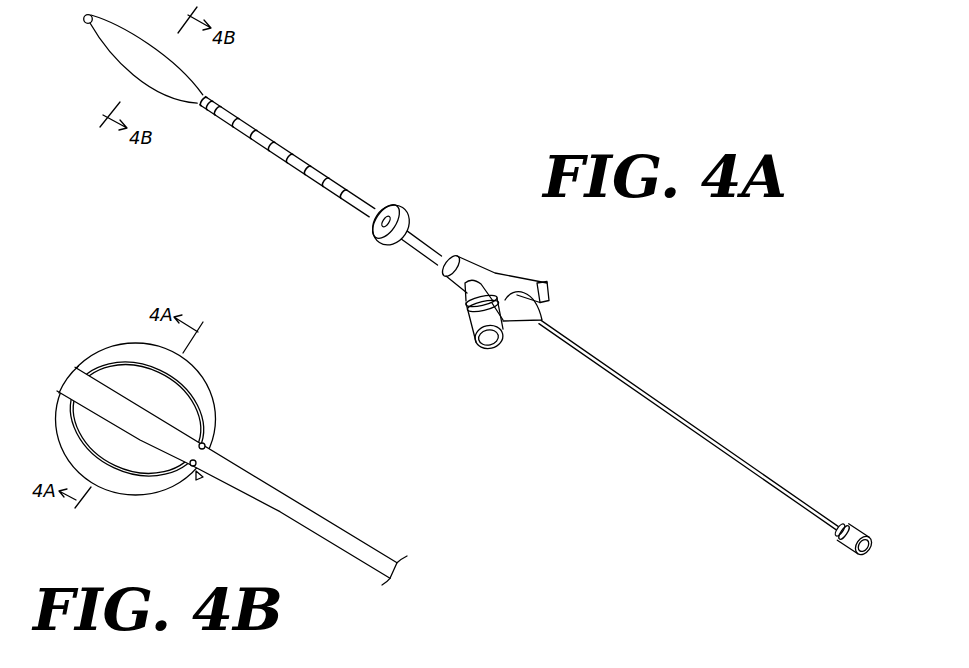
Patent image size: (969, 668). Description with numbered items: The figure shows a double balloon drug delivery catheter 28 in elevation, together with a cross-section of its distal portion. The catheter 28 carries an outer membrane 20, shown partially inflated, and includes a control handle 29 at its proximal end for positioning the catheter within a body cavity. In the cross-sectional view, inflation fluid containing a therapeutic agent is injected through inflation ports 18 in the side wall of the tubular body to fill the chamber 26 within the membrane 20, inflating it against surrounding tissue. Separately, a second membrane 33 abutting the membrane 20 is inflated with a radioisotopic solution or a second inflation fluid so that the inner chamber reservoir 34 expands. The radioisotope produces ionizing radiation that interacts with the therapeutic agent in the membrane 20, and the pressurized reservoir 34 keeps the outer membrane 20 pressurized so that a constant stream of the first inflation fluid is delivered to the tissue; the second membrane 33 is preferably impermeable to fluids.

In FIG. 4A, the membrane 20 is at (192, 79).
In FIG. 4B, the membrane 20 is at (210, 391).
In FIG. 4A, the drug delivery catheter 28 is at (413, 203).
In FIG. 4A, the control handle 29 is at (527, 263).
In FIG. 4B, the chamber 26 is at (97, 353).
In FIG. 4B, the second membrane 33 is at (72, 420).
In FIG. 4B, the inner chamber reservoir 34 is at (131, 466).
In FIG. 4B, the inflation ports 18 is at (207, 447).